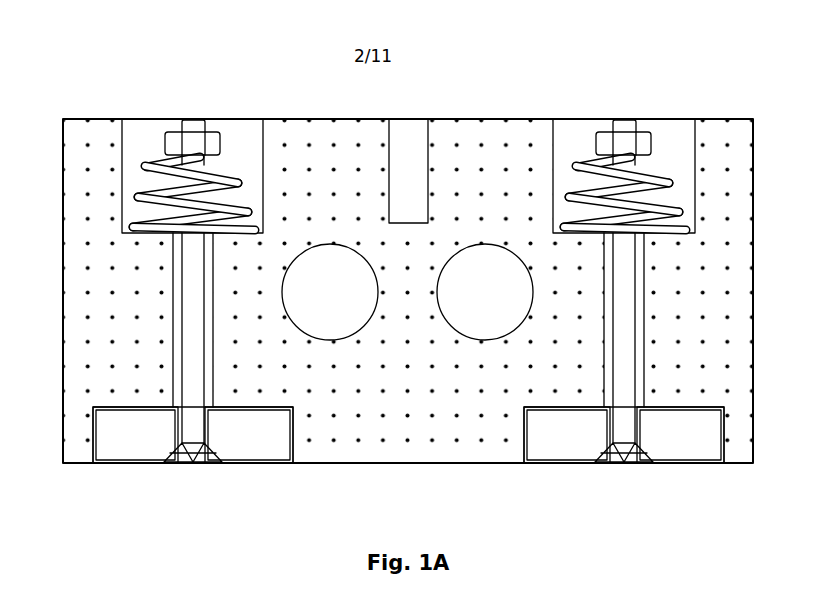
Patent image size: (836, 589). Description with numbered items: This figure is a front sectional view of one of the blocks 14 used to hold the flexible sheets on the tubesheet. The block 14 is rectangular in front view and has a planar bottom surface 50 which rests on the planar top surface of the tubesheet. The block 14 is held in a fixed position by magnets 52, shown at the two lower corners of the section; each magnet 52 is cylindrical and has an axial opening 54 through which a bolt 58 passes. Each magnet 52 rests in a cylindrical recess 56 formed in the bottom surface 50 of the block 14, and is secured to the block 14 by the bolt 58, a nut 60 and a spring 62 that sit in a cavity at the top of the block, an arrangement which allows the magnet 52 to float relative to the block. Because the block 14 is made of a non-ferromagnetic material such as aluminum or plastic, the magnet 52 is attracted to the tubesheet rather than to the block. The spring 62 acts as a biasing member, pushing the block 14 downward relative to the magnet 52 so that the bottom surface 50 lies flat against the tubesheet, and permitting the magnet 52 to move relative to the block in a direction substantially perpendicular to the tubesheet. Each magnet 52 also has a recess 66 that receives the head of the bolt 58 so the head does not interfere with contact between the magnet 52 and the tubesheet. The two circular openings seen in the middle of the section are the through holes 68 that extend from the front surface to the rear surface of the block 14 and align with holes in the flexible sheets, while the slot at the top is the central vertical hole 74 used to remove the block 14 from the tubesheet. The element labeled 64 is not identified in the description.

The block 14 is at (742, 76).
The planar bottom surface 50 is at (80, 466).
The magnet 52 is at (133, 453).
The axial opening 54 is at (183, 420).
The cylindrical recess 56 is at (95, 423).
The bolt 58 is at (191, 118).
The nut 60 is at (222, 138).
The spring 62 is at (145, 163).
The block 64 is at (266, 458).
The recess 66 is at (217, 465).
The through hole 68 is at (370, 316).
The central vertical hole 74 is at (428, 165).